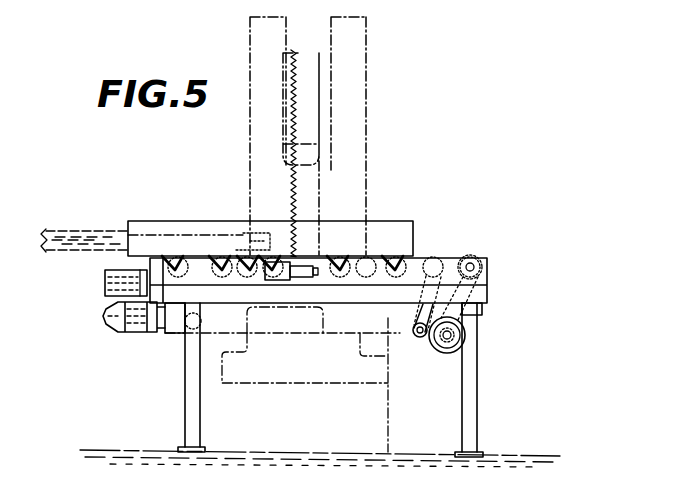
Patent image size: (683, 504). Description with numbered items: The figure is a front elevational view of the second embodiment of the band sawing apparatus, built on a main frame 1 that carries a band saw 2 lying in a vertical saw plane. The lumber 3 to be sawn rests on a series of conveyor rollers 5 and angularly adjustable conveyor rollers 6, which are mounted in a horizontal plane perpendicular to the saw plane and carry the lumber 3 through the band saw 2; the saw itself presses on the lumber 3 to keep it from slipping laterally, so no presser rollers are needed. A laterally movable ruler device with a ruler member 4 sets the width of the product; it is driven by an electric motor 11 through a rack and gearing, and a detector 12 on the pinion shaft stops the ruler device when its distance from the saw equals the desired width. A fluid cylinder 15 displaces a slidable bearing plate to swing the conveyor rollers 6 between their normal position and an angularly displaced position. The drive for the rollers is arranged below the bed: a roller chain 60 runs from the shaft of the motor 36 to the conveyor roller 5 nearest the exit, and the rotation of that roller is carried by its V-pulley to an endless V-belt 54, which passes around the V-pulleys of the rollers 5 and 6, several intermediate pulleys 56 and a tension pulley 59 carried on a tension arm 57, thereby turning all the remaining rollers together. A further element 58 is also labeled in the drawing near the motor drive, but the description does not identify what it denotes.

The main frame 1 is at (364, 125).
The band saw 2 is at (294, 88).
The lumber 3 is at (80, 232).
The ruler member 4 is at (140, 222).
The conveyor roller 5 is at (340, 256).
The angularly adjustable conveyor roller 6 is at (178, 256).
The electric motor 11 is at (132, 333).
The detector 12 is at (108, 284).
The fluid cylinder 15 is at (292, 280).
The motor 36 is at (447, 353).
The endless V-belt 54 is at (279, 338).
The intermediate pulley 56 is at (245, 262).
The tension arm 57 is at (410, 323).
The drive sprocket 58 is at (456, 320).
The tension pulley 59 is at (420, 338).
The roller chain 60 is at (470, 296).